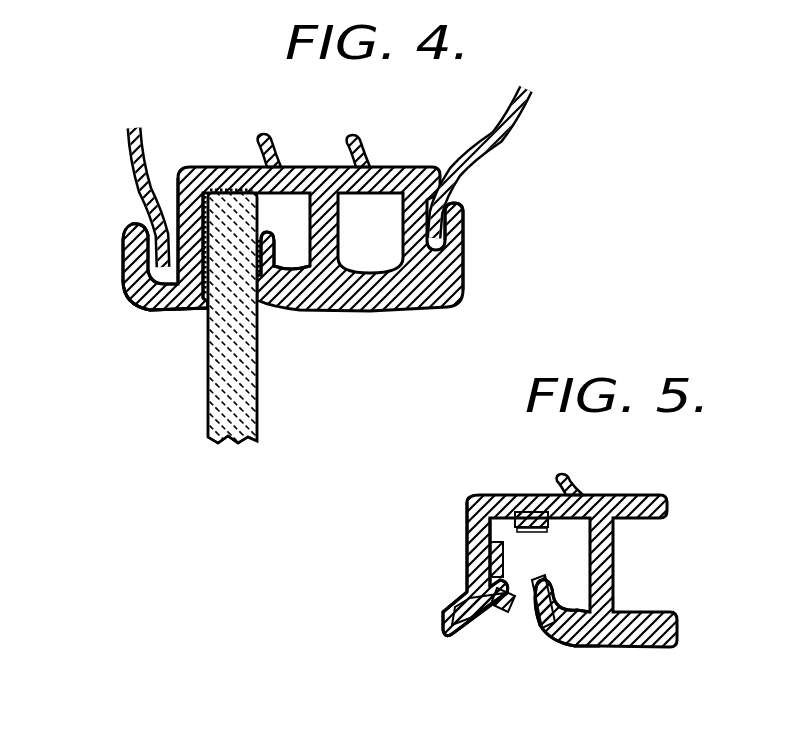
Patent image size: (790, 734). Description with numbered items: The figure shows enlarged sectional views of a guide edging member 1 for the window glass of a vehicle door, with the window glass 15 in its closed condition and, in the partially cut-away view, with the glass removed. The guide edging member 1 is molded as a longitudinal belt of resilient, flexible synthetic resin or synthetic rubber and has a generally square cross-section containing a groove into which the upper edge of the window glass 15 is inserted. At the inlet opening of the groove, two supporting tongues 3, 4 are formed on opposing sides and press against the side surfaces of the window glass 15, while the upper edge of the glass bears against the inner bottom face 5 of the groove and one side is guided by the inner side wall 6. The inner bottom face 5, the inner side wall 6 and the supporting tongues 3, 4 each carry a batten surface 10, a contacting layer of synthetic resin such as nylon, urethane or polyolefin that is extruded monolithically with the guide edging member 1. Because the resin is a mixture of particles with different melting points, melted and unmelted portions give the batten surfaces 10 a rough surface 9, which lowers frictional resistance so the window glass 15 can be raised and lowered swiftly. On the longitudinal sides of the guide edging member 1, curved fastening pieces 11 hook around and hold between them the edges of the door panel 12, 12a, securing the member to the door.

In FIG. 4, the guide edging member 1 is at (413, 165).
In FIG. 5, the guide edging member 1 is at (628, 494).
In FIG. 4, the supporting tongue 3 is at (298, 290).
In FIG. 5, the supporting tongue 3 is at (575, 622).
In FIG. 4, the supporting tongue 4 is at (205, 289).
In FIG. 5, the supporting tongue 4 is at (492, 588).
In FIG. 4, the inner bottom face 5 is at (289, 178).
In FIG. 5, the inner bottom face 5 is at (581, 495).
In FIG. 4, the inner side wall 6 is at (180, 201).
In FIG. 5, the inner side wall 6 is at (482, 540).
In FIG. 5, the rough surface 9 is at (532, 525).
In FIG. 4, the batten surface 10 is at (232, 188).
In FIG. 5, the batten surface 10 is at (527, 512).
In FIG. 4, the curved fastening piece 11 is at (135, 239).
In FIG. 4, the door panel 12 is at (132, 158).
In FIG. 4, the door panel 12a is at (520, 126).
In FIG. 4, the window glass 15 is at (217, 398).